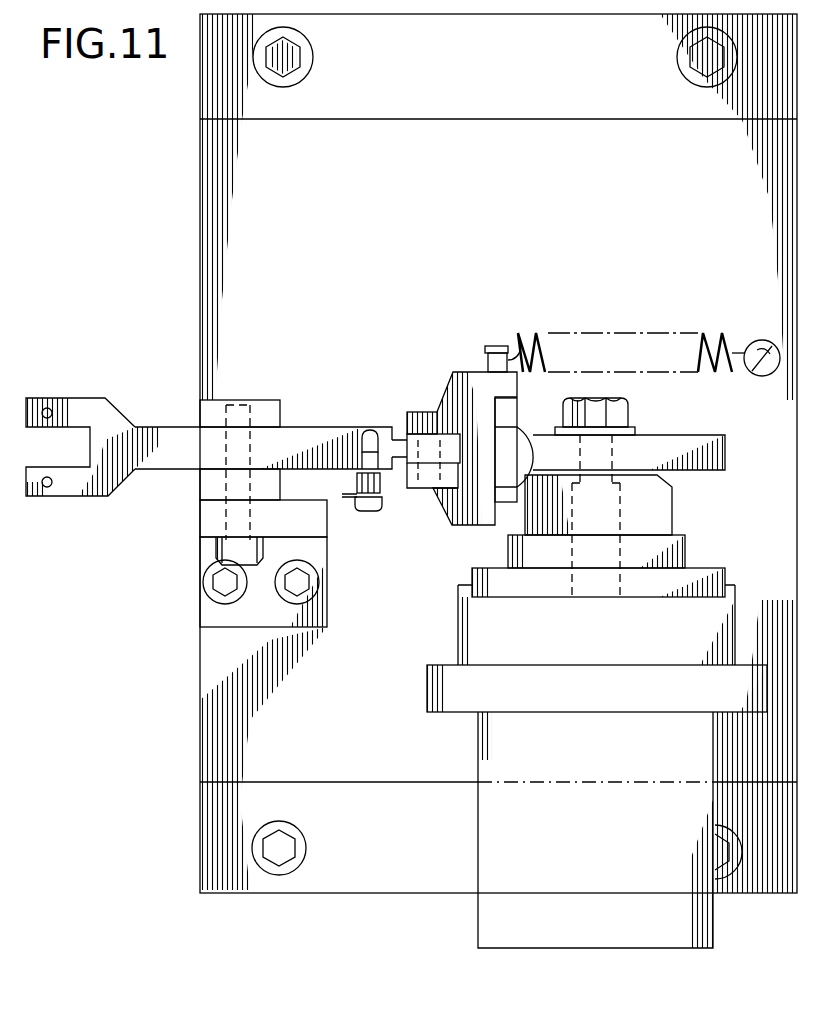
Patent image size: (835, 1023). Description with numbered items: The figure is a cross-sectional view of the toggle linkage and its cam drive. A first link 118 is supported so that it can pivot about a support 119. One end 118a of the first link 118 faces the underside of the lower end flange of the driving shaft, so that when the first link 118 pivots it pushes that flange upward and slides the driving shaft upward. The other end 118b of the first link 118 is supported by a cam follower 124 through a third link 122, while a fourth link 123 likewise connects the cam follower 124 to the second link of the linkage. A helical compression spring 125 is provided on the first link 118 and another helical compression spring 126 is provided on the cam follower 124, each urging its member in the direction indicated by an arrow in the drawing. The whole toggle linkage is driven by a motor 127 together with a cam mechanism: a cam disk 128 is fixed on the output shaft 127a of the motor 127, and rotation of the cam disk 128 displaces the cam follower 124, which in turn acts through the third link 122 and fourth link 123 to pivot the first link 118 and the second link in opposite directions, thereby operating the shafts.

The first link 118 is at (295, 438).
The one end of the first link 118a is at (68, 481).
The other end of the first link 118b is at (430, 450).
The support 119 is at (365, 430).
The third link 122 is at (450, 390).
The fourth link 123 is at (510, 412).
The cam follower 124 is at (512, 457).
The helical compression spring 125 is at (344, 489).
The helical compression spring 126 is at (532, 333).
The motor 127 is at (510, 757).
The output shaft of the motor 127a is at (610, 520).
The cam disk 128 is at (657, 447).